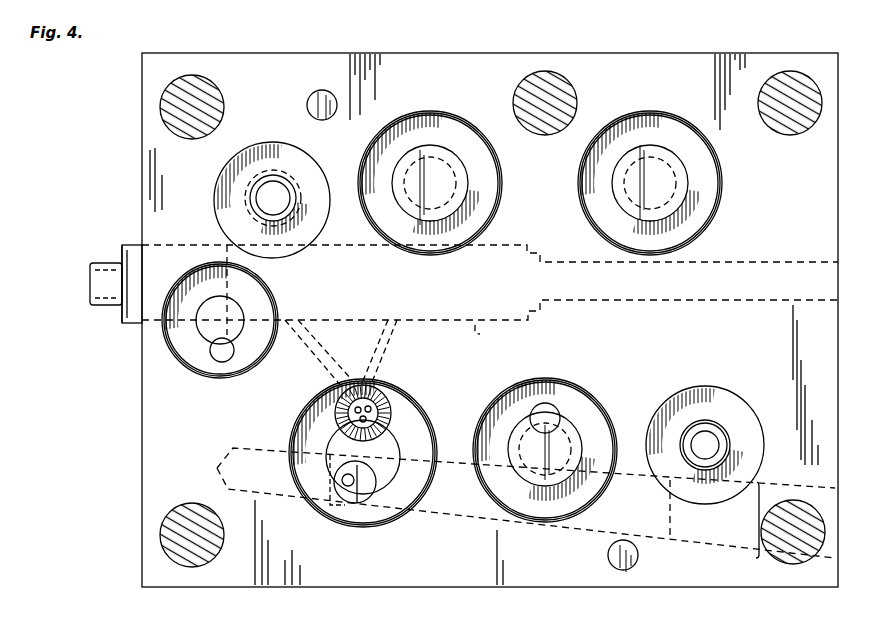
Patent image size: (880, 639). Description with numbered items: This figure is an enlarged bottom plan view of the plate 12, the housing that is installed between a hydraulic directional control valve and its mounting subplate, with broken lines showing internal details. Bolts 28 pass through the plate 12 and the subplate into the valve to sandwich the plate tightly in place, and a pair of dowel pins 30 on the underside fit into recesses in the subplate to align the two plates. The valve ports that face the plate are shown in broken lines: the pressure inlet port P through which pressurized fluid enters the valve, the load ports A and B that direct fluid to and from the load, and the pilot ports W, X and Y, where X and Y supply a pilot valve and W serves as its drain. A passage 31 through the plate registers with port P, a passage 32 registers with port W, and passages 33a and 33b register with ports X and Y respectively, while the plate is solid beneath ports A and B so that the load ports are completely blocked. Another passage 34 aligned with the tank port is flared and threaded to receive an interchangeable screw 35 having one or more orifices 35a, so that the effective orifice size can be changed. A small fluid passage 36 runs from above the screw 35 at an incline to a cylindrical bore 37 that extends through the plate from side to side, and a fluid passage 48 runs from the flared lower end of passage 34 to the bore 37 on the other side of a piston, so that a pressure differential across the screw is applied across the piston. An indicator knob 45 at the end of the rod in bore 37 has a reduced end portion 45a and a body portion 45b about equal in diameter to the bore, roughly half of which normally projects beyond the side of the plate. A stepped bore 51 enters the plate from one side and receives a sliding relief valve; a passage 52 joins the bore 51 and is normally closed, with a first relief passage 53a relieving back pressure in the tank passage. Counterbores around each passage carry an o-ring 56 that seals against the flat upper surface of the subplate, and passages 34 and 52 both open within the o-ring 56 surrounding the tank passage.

The plate 12 is at (140, 168).
The bolts 28 is at (207, 93).
The dowel holes 30 is at (318, 92).
The passage 31 is at (546, 410).
The passage 32 is at (233, 353).
The passage 33a is at (278, 192).
The passage 33b is at (715, 445).
The passage 34 is at (386, 421).
The screw 35 is at (373, 413).
The orifices 35a is at (368, 411).
The fluid passage 36 is at (296, 340).
The cylindrical bore 37 is at (480, 334).
The indicator knob 45 is at (93, 262).
The end portion 45a is at (90, 290).
The body portion 45b is at (120, 320).
The fluid passage 48 is at (392, 357).
The stepped bore 51 is at (482, 522).
The passage 52 is at (366, 492).
The first relief passage 53a is at (347, 486).
The o-ring 56 is at (496, 203).
The load port A is at (443, 160).
The load port B is at (652, 158).
The port W is at (245, 310).
The port X is at (285, 195).
The port Y is at (733, 420).
The pressure inlet port P is at (563, 430).